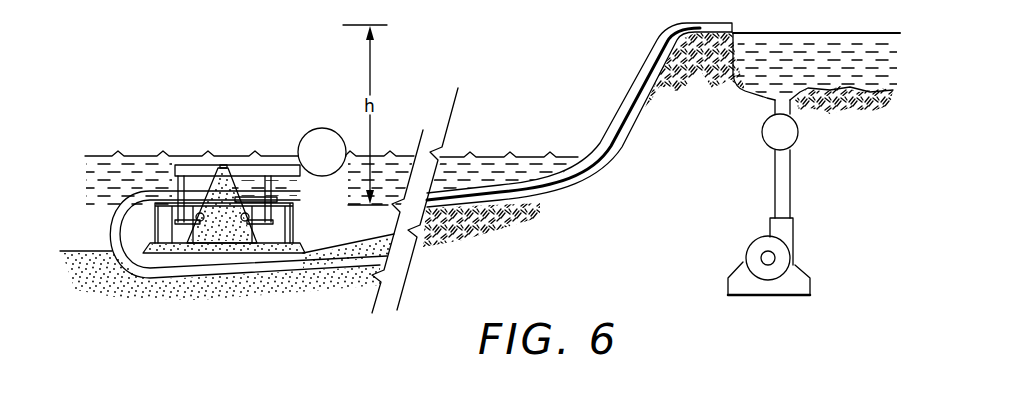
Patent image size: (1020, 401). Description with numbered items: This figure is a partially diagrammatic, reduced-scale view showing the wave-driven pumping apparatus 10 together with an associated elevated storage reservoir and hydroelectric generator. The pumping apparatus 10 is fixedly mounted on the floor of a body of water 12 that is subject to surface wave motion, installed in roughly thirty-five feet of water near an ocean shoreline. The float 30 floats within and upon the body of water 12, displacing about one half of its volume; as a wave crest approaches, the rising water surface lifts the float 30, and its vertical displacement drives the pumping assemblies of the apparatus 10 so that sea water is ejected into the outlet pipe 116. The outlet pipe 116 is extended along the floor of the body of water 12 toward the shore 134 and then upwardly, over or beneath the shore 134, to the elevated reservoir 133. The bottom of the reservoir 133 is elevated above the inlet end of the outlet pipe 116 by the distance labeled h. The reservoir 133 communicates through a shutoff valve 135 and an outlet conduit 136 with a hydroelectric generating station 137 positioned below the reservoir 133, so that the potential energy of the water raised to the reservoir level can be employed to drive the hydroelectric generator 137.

The pumping apparatus 10 is at (193, 155).
The body of water 12 is at (95, 147).
The float 30 is at (319, 145).
The outlet pipe 116 is at (122, 207).
The reservoir 133 is at (786, 40).
The shore 134 is at (623, 146).
The shutoff valve 135 is at (798, 136).
The outlet conduit 136 is at (792, 180).
The hydroelectric generating station 137 is at (790, 249).